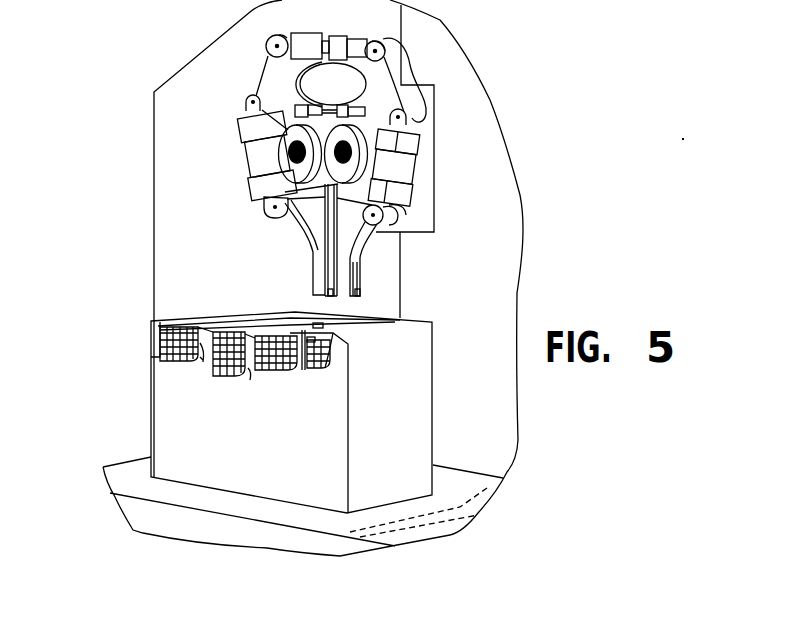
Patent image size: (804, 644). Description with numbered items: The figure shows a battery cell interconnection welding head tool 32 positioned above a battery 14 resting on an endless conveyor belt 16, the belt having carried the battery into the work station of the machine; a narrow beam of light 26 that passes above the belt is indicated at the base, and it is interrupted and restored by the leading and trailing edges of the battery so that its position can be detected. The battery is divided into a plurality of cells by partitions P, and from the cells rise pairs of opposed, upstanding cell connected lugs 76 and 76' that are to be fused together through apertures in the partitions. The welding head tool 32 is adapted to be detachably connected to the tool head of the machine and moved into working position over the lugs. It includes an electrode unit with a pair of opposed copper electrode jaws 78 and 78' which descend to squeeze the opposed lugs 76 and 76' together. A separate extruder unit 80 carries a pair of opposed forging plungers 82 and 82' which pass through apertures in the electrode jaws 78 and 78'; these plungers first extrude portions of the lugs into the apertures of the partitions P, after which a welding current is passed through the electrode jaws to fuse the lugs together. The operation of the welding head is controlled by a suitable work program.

The battery 14 is at (408, 400).
The conveyor belt 16 is at (430, 533).
The beam of light 26 is at (488, 489).
The welding head tool 32 is at (248, 158).
The cell connected lug 76 is at (181, 321).
The cell connected lug 76' is at (229, 329).
The copper electrode jaw 78 is at (289, 246).
The copper electrode jaw 78' is at (391, 250).
The extruder unit 80 is at (423, 168).
The forging plunger 82 is at (294, 242).
The forging plunger 82' is at (398, 291).
The partition P is at (252, 368).